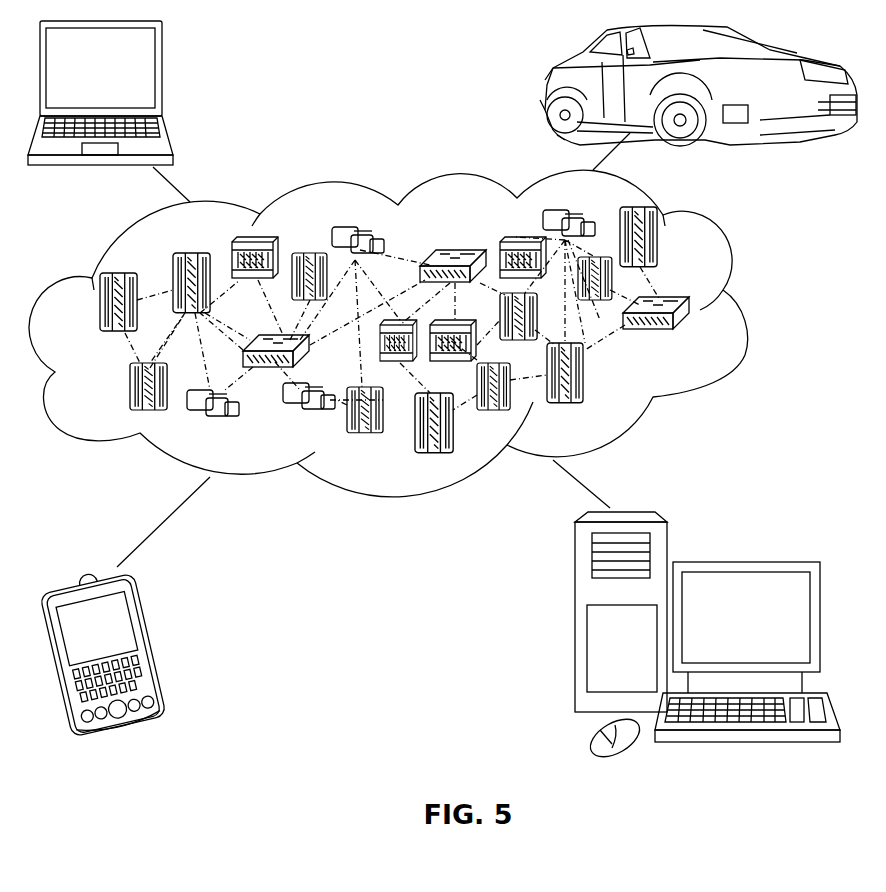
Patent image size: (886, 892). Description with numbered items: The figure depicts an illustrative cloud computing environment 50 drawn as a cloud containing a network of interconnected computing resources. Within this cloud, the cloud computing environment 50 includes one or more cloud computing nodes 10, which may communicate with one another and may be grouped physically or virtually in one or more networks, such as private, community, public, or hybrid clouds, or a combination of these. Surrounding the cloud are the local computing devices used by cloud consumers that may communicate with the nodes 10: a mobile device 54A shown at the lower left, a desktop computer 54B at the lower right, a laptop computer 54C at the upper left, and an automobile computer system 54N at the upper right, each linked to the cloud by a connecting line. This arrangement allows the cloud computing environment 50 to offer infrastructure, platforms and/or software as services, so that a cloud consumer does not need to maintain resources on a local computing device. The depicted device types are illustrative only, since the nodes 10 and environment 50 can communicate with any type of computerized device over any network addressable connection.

The laptop computer 54C is at (163, 77).
The automobile computer system 54N is at (548, 86).
The mobile device 54A is at (152, 646).
The desktop computer 54B is at (745, 560).
The cloud computing environment 50 is at (744, 313).
The cloud computing nodes 10 is at (697, 339).